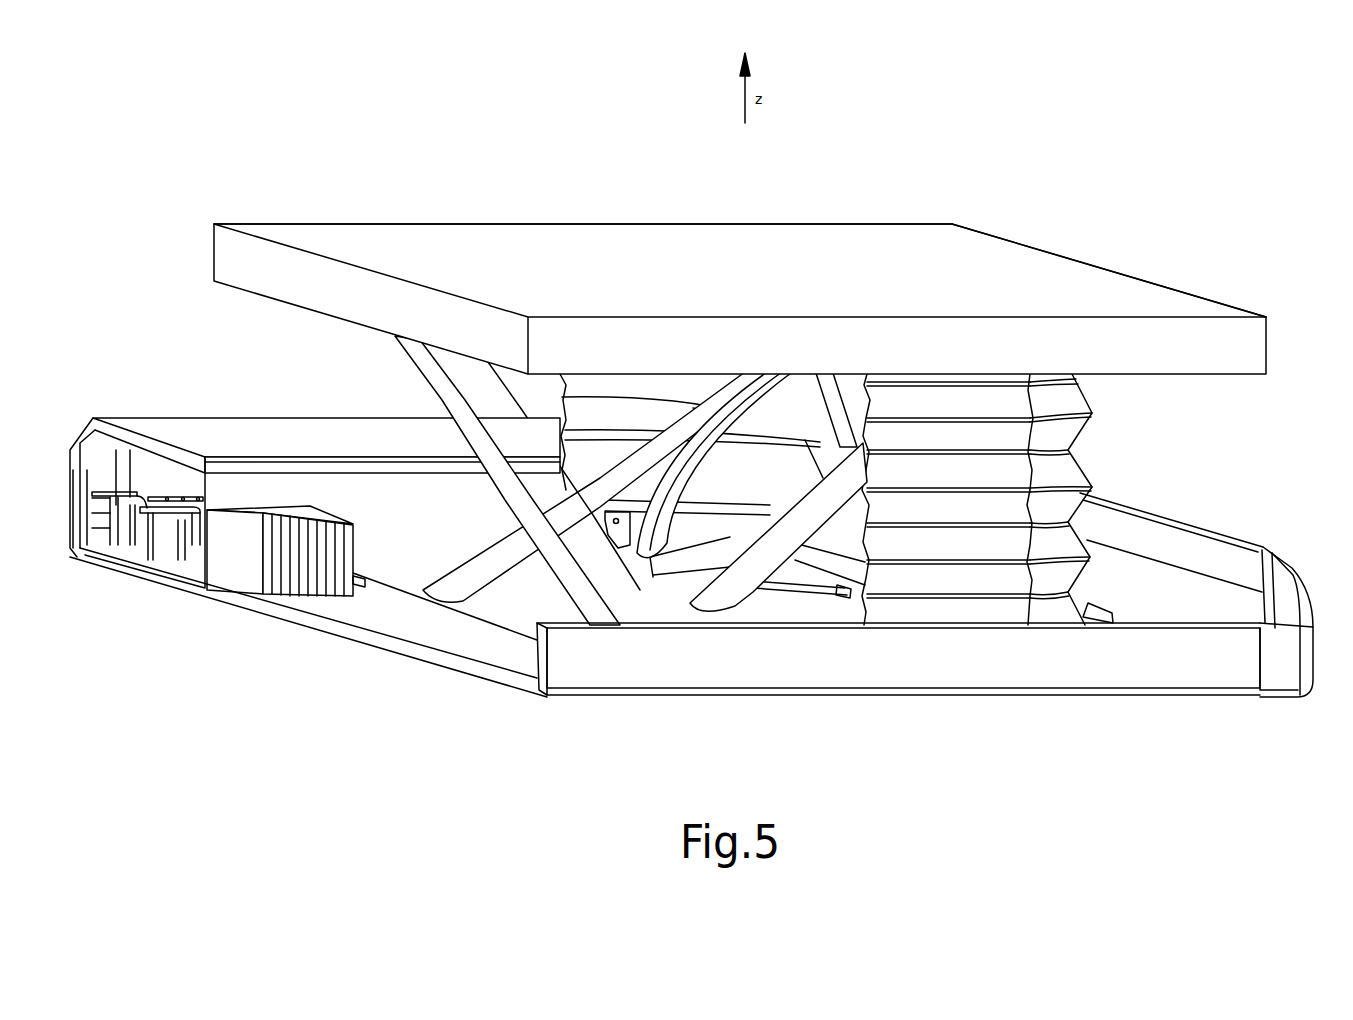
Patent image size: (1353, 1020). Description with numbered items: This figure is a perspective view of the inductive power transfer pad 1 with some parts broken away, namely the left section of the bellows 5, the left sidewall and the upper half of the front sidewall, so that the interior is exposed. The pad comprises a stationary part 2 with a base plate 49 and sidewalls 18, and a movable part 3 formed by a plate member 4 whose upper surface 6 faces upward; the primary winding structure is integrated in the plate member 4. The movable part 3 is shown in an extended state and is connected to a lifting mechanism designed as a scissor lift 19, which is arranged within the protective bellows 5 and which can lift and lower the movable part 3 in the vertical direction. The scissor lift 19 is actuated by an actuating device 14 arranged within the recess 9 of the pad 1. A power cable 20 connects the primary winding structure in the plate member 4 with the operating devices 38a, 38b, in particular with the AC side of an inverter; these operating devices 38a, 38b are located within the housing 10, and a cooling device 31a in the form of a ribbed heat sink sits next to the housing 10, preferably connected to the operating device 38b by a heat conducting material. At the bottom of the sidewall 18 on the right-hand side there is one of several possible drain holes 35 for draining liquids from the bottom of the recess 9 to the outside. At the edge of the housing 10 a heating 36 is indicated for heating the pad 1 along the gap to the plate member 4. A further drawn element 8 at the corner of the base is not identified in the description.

The inductive power transfer pad 1 is at (932, 697).
The stationary part 2 is at (150, 430).
The movable part 3 is at (1050, 254).
The plate member 4 is at (912, 242).
The bellows 5 is at (1060, 468).
The upper surface 6 is at (607, 262).
The base frame corner 8 is at (1307, 605).
The recess 9 is at (435, 632).
The housing 10 is at (200, 438).
The actuating device 14 is at (650, 560).
The sidewall 18 is at (1142, 505).
The scissor lift 19 is at (557, 553).
The power cable 20 is at (773, 393).
The cooling device 31a is at (240, 565).
The drain hole 35 is at (1105, 607).
The heating 36 is at (392, 474).
The operating device 38a is at (140, 525).
The operating device 38b is at (168, 548).
The base plate 49 is at (318, 631).